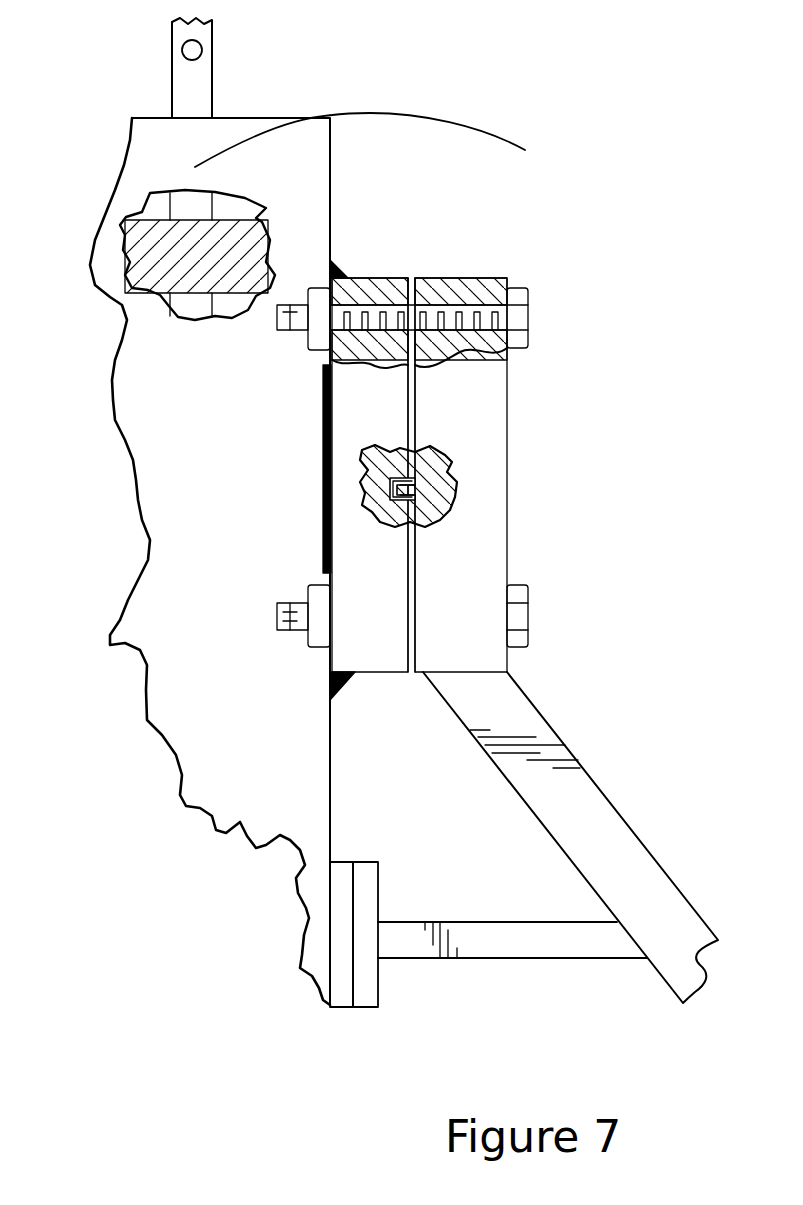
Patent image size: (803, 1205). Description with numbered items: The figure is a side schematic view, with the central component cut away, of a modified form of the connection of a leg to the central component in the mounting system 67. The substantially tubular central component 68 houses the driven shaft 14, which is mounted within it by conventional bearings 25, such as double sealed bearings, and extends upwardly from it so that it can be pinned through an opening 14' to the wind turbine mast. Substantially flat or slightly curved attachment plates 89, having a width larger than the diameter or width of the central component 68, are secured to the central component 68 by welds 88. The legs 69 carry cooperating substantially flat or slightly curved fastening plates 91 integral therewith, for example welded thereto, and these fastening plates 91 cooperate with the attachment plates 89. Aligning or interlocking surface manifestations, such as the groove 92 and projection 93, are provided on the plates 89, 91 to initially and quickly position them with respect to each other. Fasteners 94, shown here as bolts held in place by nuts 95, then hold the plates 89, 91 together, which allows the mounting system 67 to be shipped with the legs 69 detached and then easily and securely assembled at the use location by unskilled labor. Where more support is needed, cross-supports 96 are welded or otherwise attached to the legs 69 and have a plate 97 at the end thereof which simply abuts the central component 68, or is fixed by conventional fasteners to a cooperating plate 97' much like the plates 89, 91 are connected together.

The driven shaft 14 is at (227, 62).
The opening 14' is at (143, 42).
The bearings 25 is at (157, 251).
The mounting system 67 is at (660, 137).
The central component 68 is at (297, 145).
The legs 69 is at (606, 830).
The welds 88 is at (342, 270).
The attachment plates 89 is at (358, 652).
The fastening plates 91 is at (496, 407).
The groove 92 is at (400, 478).
The projection 93 is at (443, 502).
The fasteners 94 is at (491, 314).
The nuts 95 is at (318, 290).
The cross-supports 96 is at (510, 940).
The plate 97 is at (375, 980).
The cooperating plate 97' is at (281, 934).